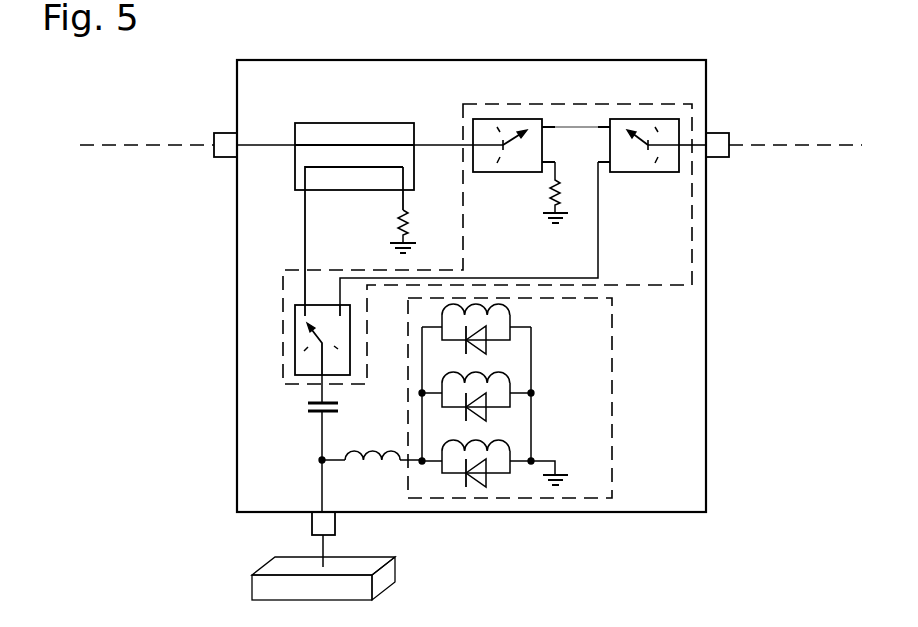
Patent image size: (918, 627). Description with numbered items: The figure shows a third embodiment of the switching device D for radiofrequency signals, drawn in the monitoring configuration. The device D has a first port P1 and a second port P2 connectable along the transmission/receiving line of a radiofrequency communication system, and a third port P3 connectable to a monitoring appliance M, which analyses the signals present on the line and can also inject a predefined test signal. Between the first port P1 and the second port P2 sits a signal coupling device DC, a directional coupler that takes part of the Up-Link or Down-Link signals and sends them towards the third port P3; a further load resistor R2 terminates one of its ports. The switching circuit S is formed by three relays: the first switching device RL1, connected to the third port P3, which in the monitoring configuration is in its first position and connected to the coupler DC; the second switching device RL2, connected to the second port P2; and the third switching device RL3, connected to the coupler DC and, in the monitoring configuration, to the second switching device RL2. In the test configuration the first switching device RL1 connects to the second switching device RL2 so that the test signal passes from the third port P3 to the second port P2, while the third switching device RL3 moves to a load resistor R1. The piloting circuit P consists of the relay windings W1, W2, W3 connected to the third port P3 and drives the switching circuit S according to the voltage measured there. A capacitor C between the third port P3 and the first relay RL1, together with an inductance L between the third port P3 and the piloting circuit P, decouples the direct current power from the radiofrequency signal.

The switching device D is at (737, 368).
The first port P1 is at (228, 143).
The second port P2 is at (718, 140).
The third port P3 is at (318, 525).
The signal coupling device DC is at (340, 128).
The load resistor R1 is at (540, 192).
The further load resistor R2 is at (389, 229).
The first switching device RL1 is at (298, 335).
The second switching device RL2 is at (640, 118).
The third switching device RL3 is at (513, 118).
The switching circuit S is at (650, 287).
The piloting circuit P is at (612, 400).
The winding W1 is at (510, 306).
The winding W2 is at (510, 372).
The winding W3 is at (510, 440).
The capacitor C is at (310, 417).
The inductance L is at (370, 473).
The monitoring appliance M is at (382, 582).